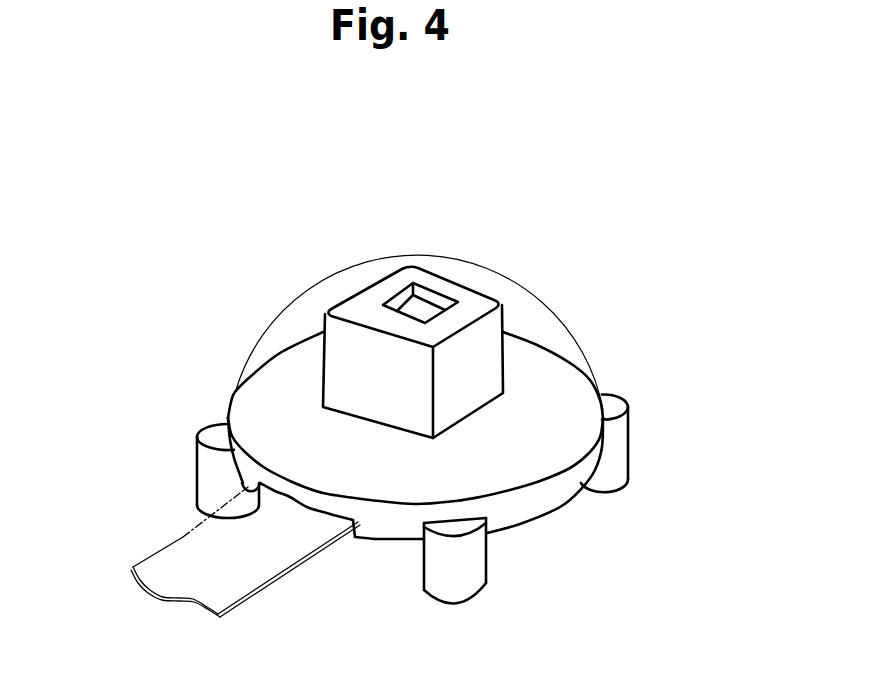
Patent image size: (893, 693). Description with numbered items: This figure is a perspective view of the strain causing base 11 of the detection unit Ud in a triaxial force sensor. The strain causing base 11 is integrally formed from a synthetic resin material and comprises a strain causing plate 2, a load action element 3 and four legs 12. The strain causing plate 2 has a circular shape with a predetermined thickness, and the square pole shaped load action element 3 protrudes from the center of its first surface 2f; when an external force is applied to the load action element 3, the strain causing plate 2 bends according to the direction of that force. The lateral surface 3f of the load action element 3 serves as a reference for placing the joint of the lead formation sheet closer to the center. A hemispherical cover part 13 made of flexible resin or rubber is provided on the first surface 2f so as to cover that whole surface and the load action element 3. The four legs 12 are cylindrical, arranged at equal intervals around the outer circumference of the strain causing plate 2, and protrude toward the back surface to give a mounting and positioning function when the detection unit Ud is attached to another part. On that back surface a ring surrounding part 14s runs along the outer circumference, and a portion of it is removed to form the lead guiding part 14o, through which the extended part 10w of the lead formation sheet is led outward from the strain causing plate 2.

The strain causing plate 2 is at (537, 402).
The first surface 2f is at (265, 401).
The load action element 3 is at (467, 293).
The lateral surface 3f is at (485, 363).
The strain causing base 11 is at (571, 511).
The leg 12 is at (197, 459).
The cover part 13 is at (317, 290).
The extended part 10w is at (183, 537).
The lead guiding part 14o is at (320, 517).
The ring surrounding part 14s is at (377, 540).
The detection unit Ud is at (211, 267).